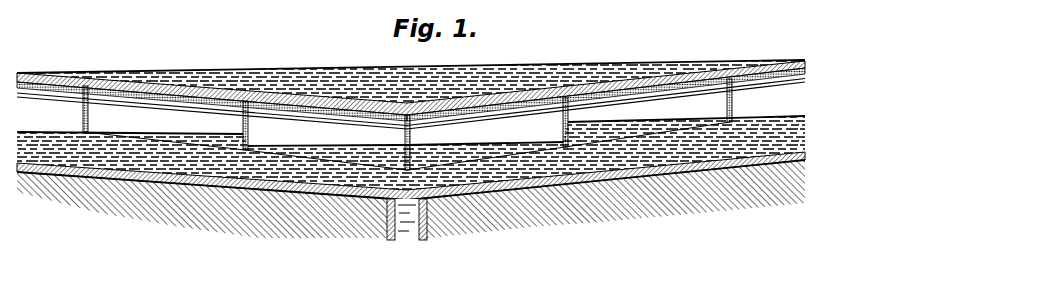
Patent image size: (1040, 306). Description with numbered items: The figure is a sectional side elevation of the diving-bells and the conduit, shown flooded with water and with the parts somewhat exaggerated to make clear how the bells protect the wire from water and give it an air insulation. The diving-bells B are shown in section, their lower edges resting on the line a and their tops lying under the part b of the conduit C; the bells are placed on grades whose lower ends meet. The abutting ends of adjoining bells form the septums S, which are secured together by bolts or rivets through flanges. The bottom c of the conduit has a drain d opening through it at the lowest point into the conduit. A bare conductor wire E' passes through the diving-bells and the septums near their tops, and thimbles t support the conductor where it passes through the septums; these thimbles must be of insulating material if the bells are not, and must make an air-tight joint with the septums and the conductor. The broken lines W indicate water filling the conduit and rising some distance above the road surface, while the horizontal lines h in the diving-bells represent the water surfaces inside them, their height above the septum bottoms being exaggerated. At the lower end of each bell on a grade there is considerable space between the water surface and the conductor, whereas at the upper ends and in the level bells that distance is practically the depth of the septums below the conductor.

The water W is at (287, 82).
The part of conduit b is at (227, 90).
The thimble t is at (411, 101).
The septum S is at (411, 136).
The line a is at (58, 121).
The conduit C is at (510, 172).
The bottom of the conduit c is at (575, 182).
The drain d is at (410, 217).
The diving-bell B is at (446, 116).
The conductor E' is at (252, 123).
The water surface line h is at (487, 143).